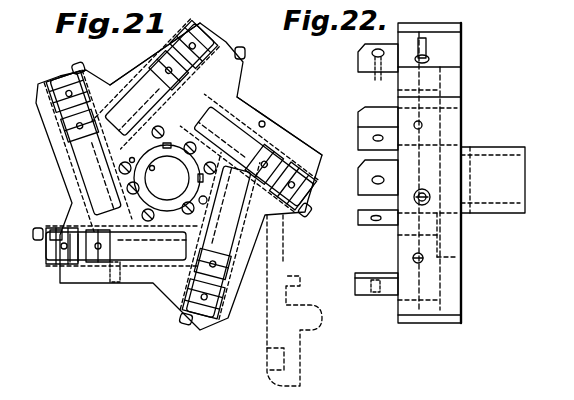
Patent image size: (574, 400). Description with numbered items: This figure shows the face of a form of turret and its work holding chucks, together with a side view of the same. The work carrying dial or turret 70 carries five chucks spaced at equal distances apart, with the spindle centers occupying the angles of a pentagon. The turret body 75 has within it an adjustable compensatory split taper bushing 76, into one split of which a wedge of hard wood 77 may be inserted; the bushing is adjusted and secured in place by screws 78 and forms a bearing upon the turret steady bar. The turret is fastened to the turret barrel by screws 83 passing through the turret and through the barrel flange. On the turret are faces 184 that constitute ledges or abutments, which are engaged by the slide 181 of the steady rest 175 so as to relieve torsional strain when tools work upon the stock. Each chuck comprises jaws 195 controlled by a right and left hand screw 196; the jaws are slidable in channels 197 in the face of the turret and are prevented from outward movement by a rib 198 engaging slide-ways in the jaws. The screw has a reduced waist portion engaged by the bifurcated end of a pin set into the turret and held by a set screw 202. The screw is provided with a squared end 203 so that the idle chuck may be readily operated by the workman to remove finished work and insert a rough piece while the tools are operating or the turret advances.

In FIG. 21, the work carrying dial or turret 70 is at (279, 118).
In FIG. 21, the turret body 75 is at (150, 286).
In FIG. 22, the turret body 75 is at (455, 248).
In FIG. 22, the adjustable compensatory split taper bushing 76 is at (526, 194).
In FIG. 21, the wedge of hard wood 77 is at (167, 178).
In FIG. 21, the screws 78 is at (168, 177).
In FIG. 21, the screws 83 is at (135, 98).
In FIG. 21, the steady rest 175 is at (286, 288).
In FIG. 21, the slide 181 is at (278, 242).
In FIG. 21, the faces 184 is at (240, 85).
In FIG. 22, the faces 184 is at (455, 82).
In FIG. 21, the jaws 195 is at (58, 100).
In FIG. 22, the jaws 195 is at (372, 78).
In FIG. 21, the right and left hand screw 196 is at (62, 150).
In FIG. 22, the right and left hand screw 196 is at (430, 59).
In FIG. 21, the channels 197 is at (70, 264).
In FIG. 22, the channels 197 is at (428, 47).
In FIG. 21, the rib 198 is at (110, 272).
In FIG. 22, the rib 198 is at (430, 38).
In FIG. 21, the set screw 202 is at (266, 124).
In FIG. 22, the set screw 202 is at (423, 125).
In FIG. 21, the squared end 203 is at (246, 53).
In FIG. 22, the squared end 203 is at (430, 197).